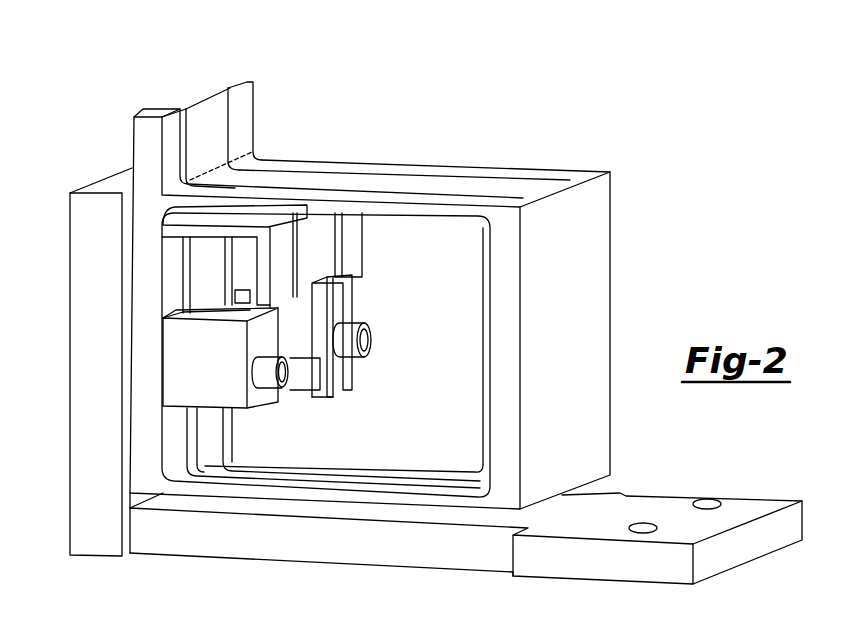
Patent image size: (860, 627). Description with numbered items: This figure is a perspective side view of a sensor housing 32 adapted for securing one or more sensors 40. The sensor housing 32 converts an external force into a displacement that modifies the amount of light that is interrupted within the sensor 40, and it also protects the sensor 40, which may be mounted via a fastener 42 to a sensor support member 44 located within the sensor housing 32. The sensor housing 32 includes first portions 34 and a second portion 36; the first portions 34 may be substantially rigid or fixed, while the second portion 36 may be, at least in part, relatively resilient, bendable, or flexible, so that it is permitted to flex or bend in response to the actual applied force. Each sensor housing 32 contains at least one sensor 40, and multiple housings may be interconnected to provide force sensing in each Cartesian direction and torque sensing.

The sensor housing 32 is at (505, 69).
The first portions 34 is at (155, 112).
The second portion 36 is at (195, 100).
The sensor 40 is at (370, 388).
The fastener 42 is at (372, 338).
The sensor support member 44 is at (197, 376).